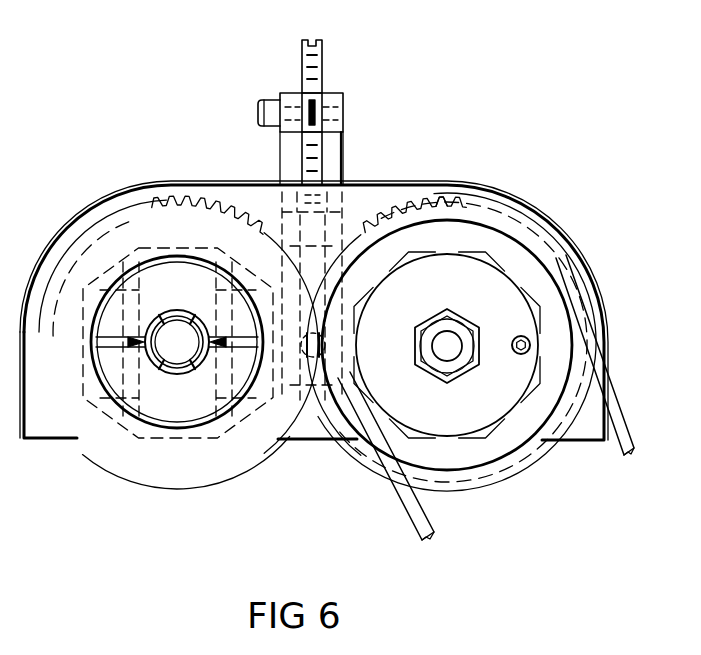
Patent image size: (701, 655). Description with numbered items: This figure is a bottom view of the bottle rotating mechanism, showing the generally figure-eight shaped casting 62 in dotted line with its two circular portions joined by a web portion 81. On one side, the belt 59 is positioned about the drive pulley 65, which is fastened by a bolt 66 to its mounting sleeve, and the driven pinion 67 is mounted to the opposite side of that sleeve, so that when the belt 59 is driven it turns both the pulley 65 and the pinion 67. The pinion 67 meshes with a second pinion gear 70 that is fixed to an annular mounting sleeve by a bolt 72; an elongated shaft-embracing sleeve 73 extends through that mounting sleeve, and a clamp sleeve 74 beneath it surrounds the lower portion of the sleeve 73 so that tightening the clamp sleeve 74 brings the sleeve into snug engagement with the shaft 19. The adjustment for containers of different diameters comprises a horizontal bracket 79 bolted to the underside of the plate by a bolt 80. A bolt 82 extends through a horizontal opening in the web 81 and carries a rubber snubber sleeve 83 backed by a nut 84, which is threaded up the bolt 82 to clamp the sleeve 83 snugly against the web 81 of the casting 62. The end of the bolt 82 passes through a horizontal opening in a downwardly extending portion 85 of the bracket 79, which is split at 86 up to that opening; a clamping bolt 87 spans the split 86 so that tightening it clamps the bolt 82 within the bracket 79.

The shaft 19 is at (171, 336).
The belt 59 is at (630, 428).
The casting 62 is at (474, 244).
The drive pulley 65 is at (487, 283).
The bolt 66 is at (530, 343).
The driven pinion 67 is at (442, 197).
The second pinion gear 70 is at (145, 462).
The bolt 72 is at (215, 326).
The shaft-embracing sleeve 73 is at (178, 405).
The clamp sleeve 74 is at (205, 410).
The horizontal bracket 79 is at (290, 152).
The bolt 80 is at (311, 392).
The web portion 81 is at (383, 203).
The bolt 82 is at (302, 44).
The snubber sleeve 83 is at (280, 225).
The nut 84 is at (347, 167).
The downwardly extending portion 85 is at (290, 100).
The split 86 is at (316, 108).
The clamping bolt 87 is at (258, 106).